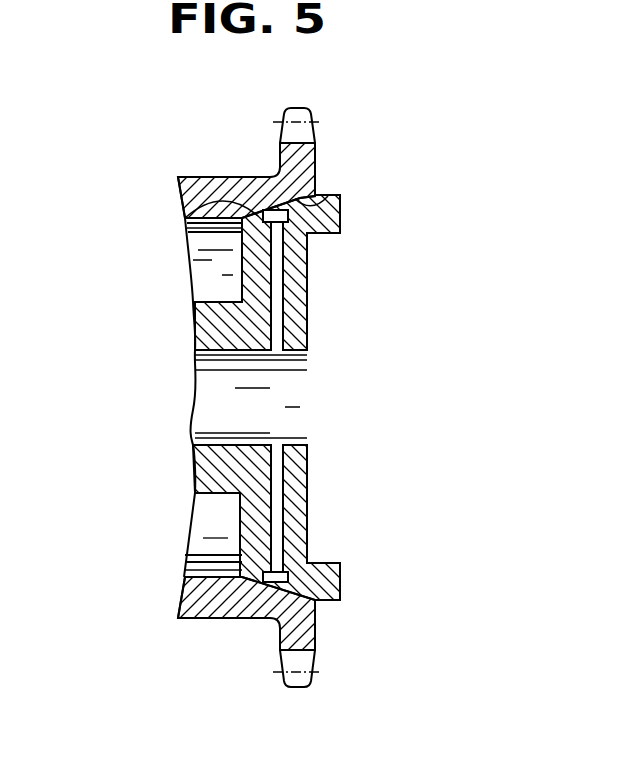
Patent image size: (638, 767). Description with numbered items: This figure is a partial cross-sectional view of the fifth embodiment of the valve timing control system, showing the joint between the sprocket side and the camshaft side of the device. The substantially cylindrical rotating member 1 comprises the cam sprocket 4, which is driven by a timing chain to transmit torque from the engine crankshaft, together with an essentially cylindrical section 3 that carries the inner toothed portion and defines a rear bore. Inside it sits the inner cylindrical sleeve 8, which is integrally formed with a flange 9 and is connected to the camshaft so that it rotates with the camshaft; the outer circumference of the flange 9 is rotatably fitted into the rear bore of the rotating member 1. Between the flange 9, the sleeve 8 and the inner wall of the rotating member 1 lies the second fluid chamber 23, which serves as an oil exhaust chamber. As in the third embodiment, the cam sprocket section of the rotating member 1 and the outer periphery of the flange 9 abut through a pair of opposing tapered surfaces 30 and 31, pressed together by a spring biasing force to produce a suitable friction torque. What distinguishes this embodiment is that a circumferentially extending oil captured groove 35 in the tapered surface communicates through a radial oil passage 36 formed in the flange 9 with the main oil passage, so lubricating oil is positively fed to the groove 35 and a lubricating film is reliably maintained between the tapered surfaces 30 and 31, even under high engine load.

The rotating member 1 is at (212, 163).
The cylindrical section 3 is at (183, 176).
The cam sprocket 4 is at (312, 112).
The inner cylindrical sleeve 8 is at (206, 507).
The flange 9 is at (303, 322).
The second fluid chamber 23 is at (207, 260).
The tapered surface 30 is at (332, 192).
The tapered surface 31 is at (184, 213).
The oil captured groove 35 is at (273, 210).
The radial oil passage 36 is at (277, 262).